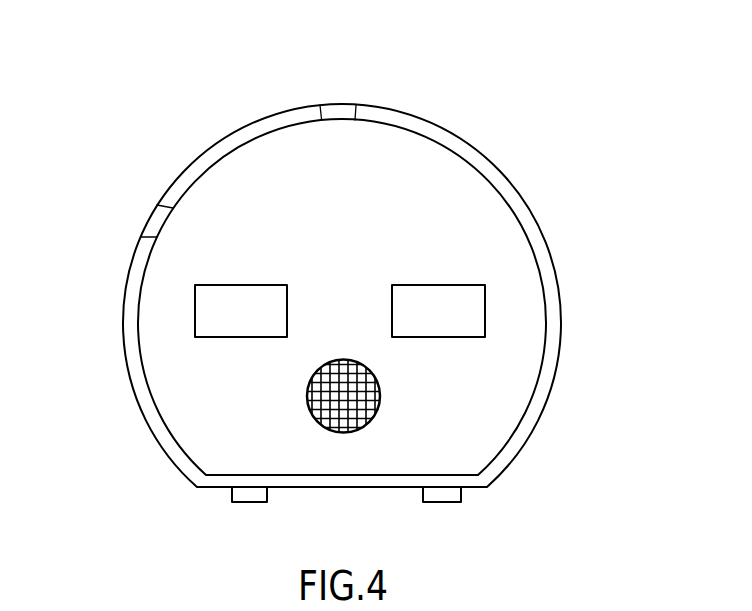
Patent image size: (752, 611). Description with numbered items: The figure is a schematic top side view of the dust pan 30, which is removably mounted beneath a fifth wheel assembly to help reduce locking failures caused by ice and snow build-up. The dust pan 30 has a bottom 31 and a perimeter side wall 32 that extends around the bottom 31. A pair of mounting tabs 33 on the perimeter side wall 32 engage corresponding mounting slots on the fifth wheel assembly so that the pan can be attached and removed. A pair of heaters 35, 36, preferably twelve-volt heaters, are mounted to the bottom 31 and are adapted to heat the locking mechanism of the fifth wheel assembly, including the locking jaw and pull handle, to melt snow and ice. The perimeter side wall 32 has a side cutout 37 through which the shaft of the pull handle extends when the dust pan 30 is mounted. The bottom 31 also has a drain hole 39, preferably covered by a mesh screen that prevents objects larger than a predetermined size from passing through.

The dust pan 30 is at (556, 109).
The bottom 31 is at (493, 212).
The perimeter side wall 32 is at (418, 122).
The mounting tabs 33 is at (243, 493).
The heater 35 is at (225, 327).
The heater 36 is at (485, 287).
The side cutout 37 is at (150, 216).
The drain hole 39 is at (380, 390).